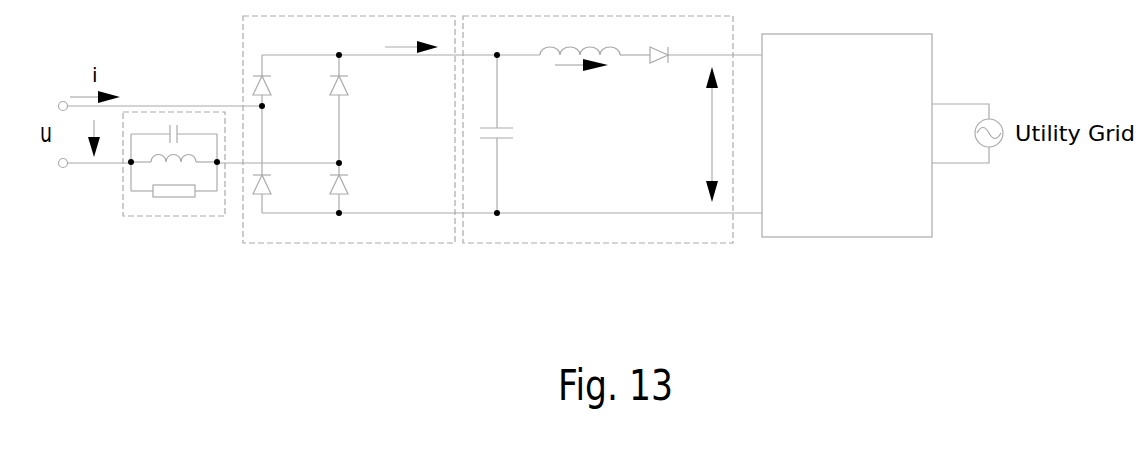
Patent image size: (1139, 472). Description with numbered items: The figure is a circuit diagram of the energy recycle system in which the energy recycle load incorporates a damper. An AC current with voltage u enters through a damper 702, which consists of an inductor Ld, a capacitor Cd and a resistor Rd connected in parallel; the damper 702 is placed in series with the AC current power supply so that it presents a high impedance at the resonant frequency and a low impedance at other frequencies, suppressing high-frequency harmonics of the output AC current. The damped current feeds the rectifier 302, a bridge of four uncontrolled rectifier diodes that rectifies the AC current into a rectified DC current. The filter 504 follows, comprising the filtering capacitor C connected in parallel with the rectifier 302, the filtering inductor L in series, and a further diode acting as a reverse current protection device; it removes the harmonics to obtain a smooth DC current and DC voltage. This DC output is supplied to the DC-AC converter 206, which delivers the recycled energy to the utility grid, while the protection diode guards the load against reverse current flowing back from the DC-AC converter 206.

The damper 702 is at (170, 217).
The rectifier 302 is at (350, 243).
The filter 504 is at (523, 243).
The DC-AC converter 206 is at (847, 237).